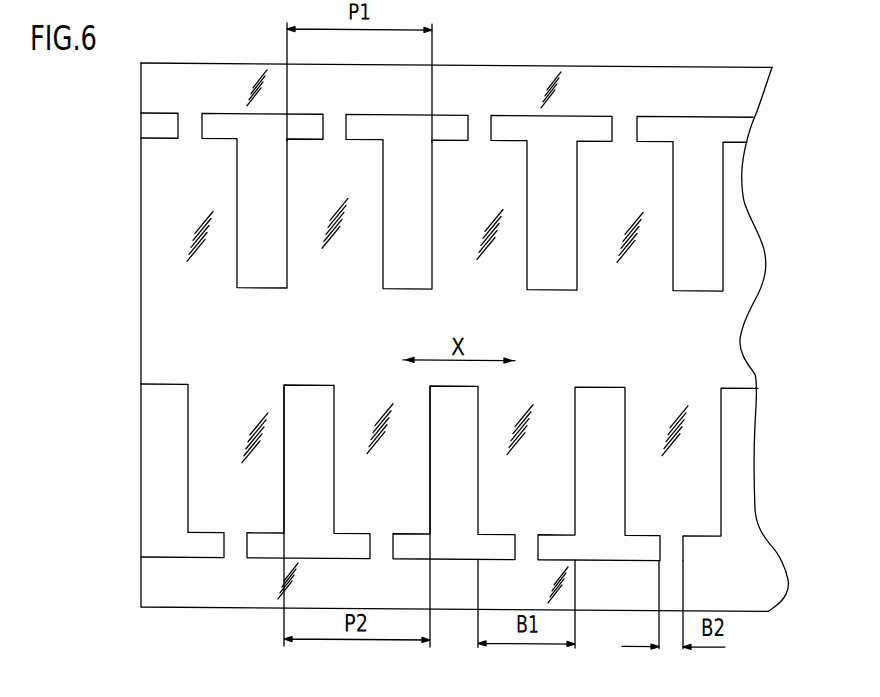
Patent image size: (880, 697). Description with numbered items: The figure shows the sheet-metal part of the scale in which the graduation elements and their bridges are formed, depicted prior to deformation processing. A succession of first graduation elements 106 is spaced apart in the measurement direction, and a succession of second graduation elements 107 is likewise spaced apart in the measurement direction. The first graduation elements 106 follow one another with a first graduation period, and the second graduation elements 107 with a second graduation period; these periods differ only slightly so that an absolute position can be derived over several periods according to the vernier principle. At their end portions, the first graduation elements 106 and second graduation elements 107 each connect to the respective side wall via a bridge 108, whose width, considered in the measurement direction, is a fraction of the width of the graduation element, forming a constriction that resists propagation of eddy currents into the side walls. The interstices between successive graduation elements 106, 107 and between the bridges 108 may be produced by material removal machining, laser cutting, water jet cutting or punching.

The first graduation element 106 is at (168, 271).
The second graduation element 107 is at (215, 457).
The bridge 108 is at (191, 126).